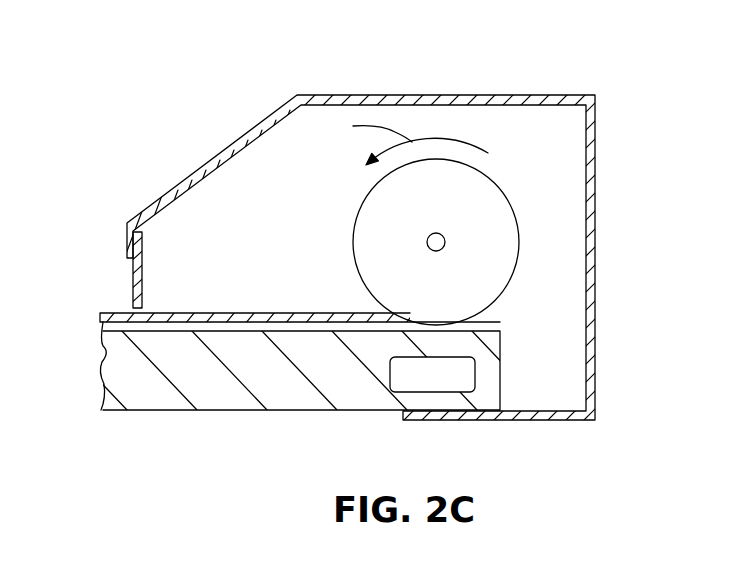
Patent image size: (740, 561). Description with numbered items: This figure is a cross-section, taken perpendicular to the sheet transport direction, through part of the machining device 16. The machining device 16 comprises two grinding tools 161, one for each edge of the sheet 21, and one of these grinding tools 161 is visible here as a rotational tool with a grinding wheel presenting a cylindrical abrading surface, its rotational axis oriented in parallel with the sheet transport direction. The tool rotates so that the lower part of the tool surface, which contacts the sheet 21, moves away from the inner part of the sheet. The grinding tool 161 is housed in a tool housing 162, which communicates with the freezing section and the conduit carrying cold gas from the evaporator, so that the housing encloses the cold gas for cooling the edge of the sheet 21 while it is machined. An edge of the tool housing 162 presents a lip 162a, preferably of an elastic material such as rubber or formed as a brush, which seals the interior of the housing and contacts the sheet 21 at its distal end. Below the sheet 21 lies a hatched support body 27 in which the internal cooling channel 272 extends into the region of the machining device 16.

The machining device 16 is at (574, 72).
The tool housing 162 is at (405, 95).
The lip 162a is at (133, 277).
The grinding tool 161 is at (356, 222).
The sheet 21 is at (206, 312).
The block 27 is at (170, 410).
The internal cooling channel 272 is at (443, 388).